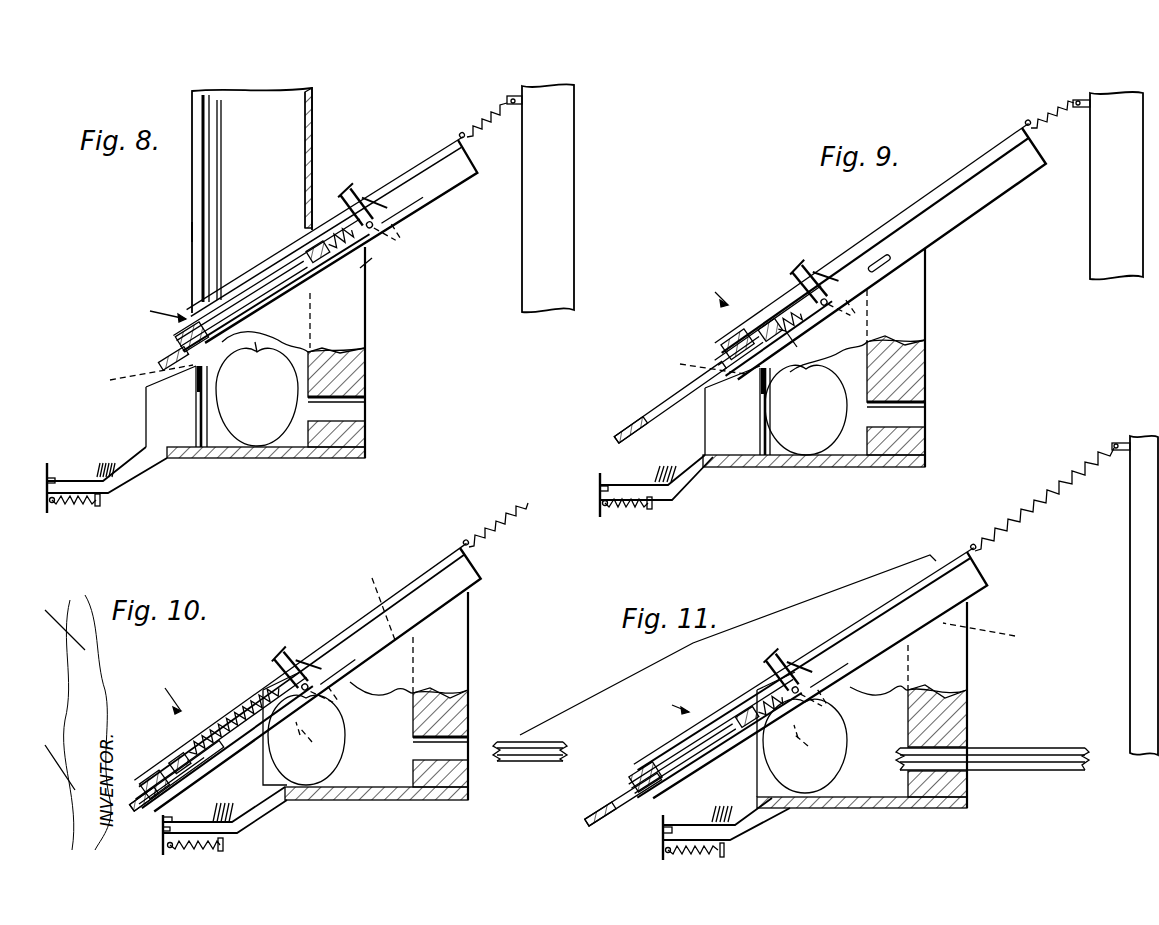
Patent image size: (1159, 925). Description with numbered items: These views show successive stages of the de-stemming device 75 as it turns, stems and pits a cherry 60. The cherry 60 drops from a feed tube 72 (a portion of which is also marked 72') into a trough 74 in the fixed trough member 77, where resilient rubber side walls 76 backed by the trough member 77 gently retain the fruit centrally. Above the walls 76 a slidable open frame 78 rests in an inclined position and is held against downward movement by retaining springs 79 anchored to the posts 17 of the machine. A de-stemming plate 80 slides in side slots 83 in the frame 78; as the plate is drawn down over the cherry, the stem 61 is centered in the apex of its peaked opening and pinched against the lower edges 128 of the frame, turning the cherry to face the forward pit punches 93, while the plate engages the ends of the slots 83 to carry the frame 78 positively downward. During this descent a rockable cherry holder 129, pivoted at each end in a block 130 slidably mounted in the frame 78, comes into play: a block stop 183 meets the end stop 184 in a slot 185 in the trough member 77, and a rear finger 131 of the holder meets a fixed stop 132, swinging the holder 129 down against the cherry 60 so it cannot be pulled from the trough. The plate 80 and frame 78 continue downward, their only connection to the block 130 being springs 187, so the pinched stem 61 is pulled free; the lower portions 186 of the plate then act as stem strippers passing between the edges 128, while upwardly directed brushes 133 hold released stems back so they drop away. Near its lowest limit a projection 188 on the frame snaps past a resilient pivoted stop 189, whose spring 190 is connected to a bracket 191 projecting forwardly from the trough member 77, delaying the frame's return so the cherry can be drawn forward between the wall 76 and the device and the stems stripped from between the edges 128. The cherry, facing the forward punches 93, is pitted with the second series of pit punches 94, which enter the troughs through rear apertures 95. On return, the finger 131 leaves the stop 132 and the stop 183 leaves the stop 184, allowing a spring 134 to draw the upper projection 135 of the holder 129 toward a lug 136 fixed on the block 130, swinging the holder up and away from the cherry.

In FIG. 8, the posts 17 is at (555, 239).
In FIG. 9, the posts 17 is at (1110, 260).
In FIG. 11, the posts 17 is at (1130, 670).
In FIG. 8, the cherry 60 is at (280, 433).
In FIG. 9, the cherry 60 is at (815, 458).
In FIG. 10, the cherry 60 is at (340, 765).
In FIG. 11, the cherry 60 is at (845, 777).
In FIG. 8, the stem 61 is at (250, 300).
In FIG. 9, the stem 61 is at (745, 328).
In FIG. 10, the stem 61 is at (170, 775).
In FIG. 11, the stem 61 is at (662, 747).
In FIG. 8, the feed tube 72 is at (277, 200).
In FIG. 8, the panel edge 72' is at (159, 230).
In FIG. 8, the trough 74 is at (217, 445).
In FIG. 9, the trough 74 is at (865, 462).
In FIG. 10, the trough 74 is at (397, 800).
In FIG. 11, the trough 74 is at (896, 800).
In FIG. 8, the de-stemming device 75 is at (153, 311).
In FIG. 9, the de-stemming device 75 is at (709, 294).
In FIG. 10, the de-stemming device 75 is at (162, 694).
In FIG. 11, the de-stemming device 75 is at (668, 705).
In FIG. 8, the resilient rubber side walls 76 is at (186, 450).
In FIG. 9, the resilient rubber side walls 76 is at (760, 460).
In FIG. 8, the trough member 77 is at (363, 363).
In FIG. 9, the trough member 77 is at (926, 380).
In FIG. 10, the trough member 77 is at (457, 655).
In FIG. 11, the trough member 77 is at (957, 722).
In FIG. 8, the slidable open frame 78 is at (450, 185).
In FIG. 9, the slidable open frame 78 is at (1018, 180).
In FIG. 10, the slidable open frame 78 is at (470, 575).
In FIG. 11, the slidable open frame 78 is at (985, 598).
In FIG. 8, the retaining springs 79 is at (490, 115).
In FIG. 9, the retaining springs 79 is at (1050, 118).
In FIG. 10, the retaining springs 79 is at (505, 512).
In FIG. 11, the retaining springs 79 is at (1047, 507).
In FIG. 8, the de-stemming plate 80 is at (313, 252).
In FIG. 9, the de-stemming plate 80 is at (768, 325).
In FIG. 10, the de-stemming plate 80 is at (172, 770).
In FIG. 11, the de-stemming plate 80 is at (730, 727).
In FIG. 8, the side slots 83 is at (413, 180).
In FIG. 9, the side slots 83 is at (960, 183).
In FIG. 10, the side slots 83 is at (353, 637).
In FIG. 11, the side slots 83 is at (910, 605).
In FIG. 11, the pit punches 93 is at (528, 765).
In FIG. 11, the pit punches 94 is at (1047, 747).
In FIG. 8, the rear apertures 95 is at (353, 417).
In FIG. 9, the rear apertures 95 is at (912, 430).
In FIG. 8, the lower edges 128 is at (182, 334).
In FIG. 9, the lower edges 128 is at (735, 345).
In FIG. 11, the lower edges 128 is at (660, 767).
In FIG. 8, the cherry holder 129 is at (363, 260).
In FIG. 9, the cherry holder 129 is at (797, 347).
In FIG. 10, the cherry holder 129 is at (302, 748).
In FIG. 11, the cherry holder 129 is at (795, 753).
In FIG. 8, the block 130 is at (367, 223).
In FIG. 9, the block 130 is at (880, 270).
In FIG. 10, the block 130 is at (350, 658).
In FIG. 11, the block 130 is at (820, 688).
In FIG. 8, the rear finger 131 is at (370, 260).
In FIG. 9, the rear finger 131 is at (803, 333).
In FIG. 10, the rear finger 131 is at (303, 717).
In FIG. 11, the rear finger 131 is at (817, 730).
In FIG. 8, the fixed stop 132 is at (197, 390).
In FIG. 9, the fixed stop 132 is at (755, 398).
In FIG. 10, the fixed stop 132 is at (338, 740).
In FIG. 11, the fixed stop 132 is at (833, 747).
In FIG. 8, the brushes 133 is at (104, 462).
In FIG. 9, the brushes 133 is at (669, 463).
In FIG. 11, the brushes 133 is at (723, 806).
In FIG. 8, the spring 134 is at (355, 188).
In FIG. 9, the spring 134 is at (805, 268).
In FIG. 10, the spring 134 is at (270, 667).
In FIG. 11, the spring 134 is at (785, 665).
In FIG. 8, the upper projection 135 is at (347, 193).
In FIG. 9, the upper projection 135 is at (795, 272).
In FIG. 10, the upper projection 135 is at (253, 677).
In FIG. 11, the upper projection 135 is at (758, 680).
In FIG. 8, the lug 136 is at (373, 190).
In FIG. 9, the lug 136 is at (812, 272).
In FIG. 10, the lug 136 is at (290, 650).
In FIG. 11, the lug 136 is at (793, 655).
In FIG. 8, the stop 183 is at (372, 240).
In FIG. 9, the stop 183 is at (860, 312).
In FIG. 10, the stop 183 is at (337, 692).
In FIG. 11, the stop 183 is at (837, 705).
In FIG. 8, the stop 184 is at (133, 377).
In FIG. 9, the stop 184 is at (696, 363).
In FIG. 10, the stop 184 is at (318, 741).
In FIG. 11, the stop 184 is at (814, 748).
In FIG. 8, the slot 185 is at (312, 318).
In FIG. 9, the slot 185 is at (907, 267).
In FIG. 10, the slot 185 is at (383, 624).
In FIG. 11, the slot 185 is at (978, 656).
In FIG. 9, the lower portions 186 is at (628, 425).
In FIG. 11, the lower portions 186 is at (585, 826).
In FIG. 8, the springs 187 is at (370, 224).
In FIG. 9, the springs 187 is at (790, 300).
In FIG. 10, the springs 187 is at (232, 716).
In FIG. 11, the springs 187 is at (750, 698).
In FIG. 8, the projection 188 is at (196, 384).
In FIG. 9, the projection 188 is at (750, 393).
In FIG. 10, the projection 188 is at (162, 822).
In FIG. 11, the projection 188 is at (660, 820).
In FIG. 8, the resilient pivoted stop 189 is at (48, 465).
In FIG. 9, the resilient pivoted stop 189 is at (601, 474).
In FIG. 10, the resilient pivoted stop 189 is at (163, 837).
In FIG. 11, the resilient pivoted stop 189 is at (660, 837).
In FIG. 8, the spring 190 is at (75, 505).
In FIG. 9, the spring 190 is at (630, 508).
In FIG. 10, the spring 190 is at (210, 847).
In FIG. 11, the spring 190 is at (700, 855).
In FIG. 8, the bracket 191 is at (133, 470).
In FIG. 9, the bracket 191 is at (690, 478).
In FIG. 10, the bracket 191 is at (250, 813).
In FIG. 11, the bracket 191 is at (760, 822).